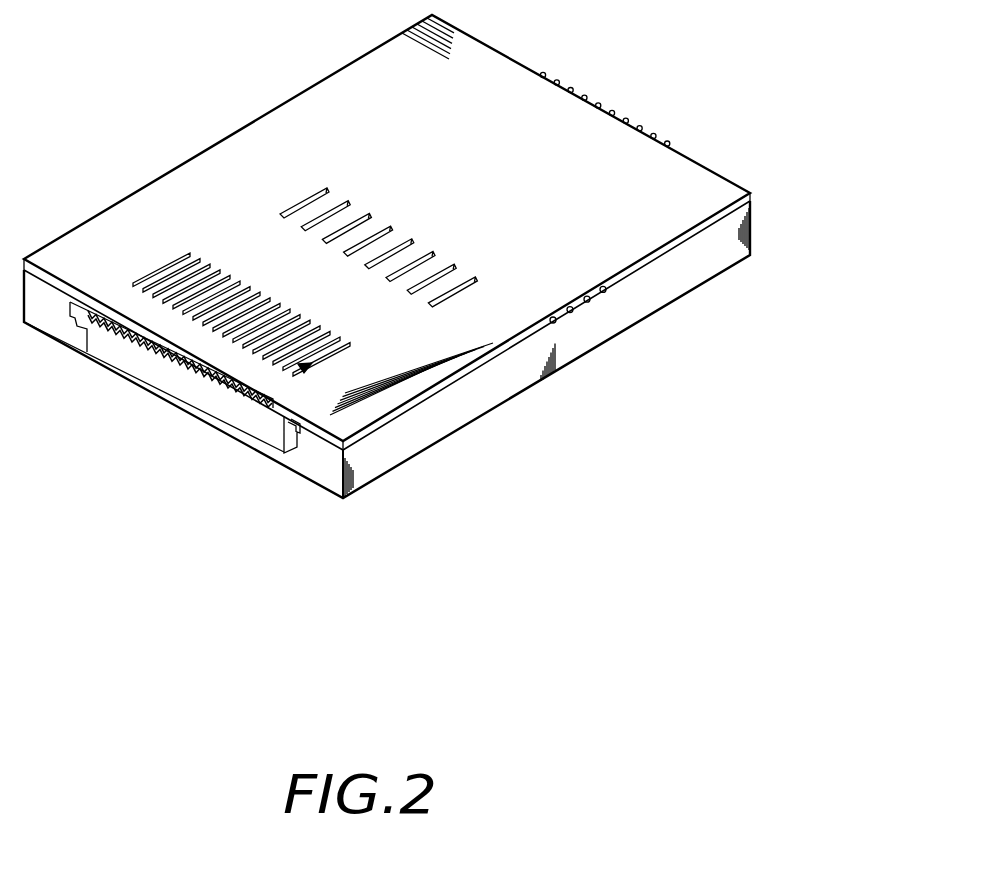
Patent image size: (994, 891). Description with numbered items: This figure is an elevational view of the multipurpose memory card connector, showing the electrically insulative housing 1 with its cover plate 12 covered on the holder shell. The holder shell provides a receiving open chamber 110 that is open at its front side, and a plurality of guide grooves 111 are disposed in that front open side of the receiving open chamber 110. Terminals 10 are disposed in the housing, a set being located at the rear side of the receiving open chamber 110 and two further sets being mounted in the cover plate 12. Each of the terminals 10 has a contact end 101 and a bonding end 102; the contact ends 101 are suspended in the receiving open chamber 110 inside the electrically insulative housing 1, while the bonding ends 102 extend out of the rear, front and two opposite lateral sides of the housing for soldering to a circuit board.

The electrically insulative housing 1 is at (592, 392).
The terminals 10 is at (633, 115).
The cover plate 12 is at (252, 96).
The contact end 101 is at (336, 352).
The bonding end 102 is at (587, 100).
The receiving open chamber 110 is at (272, 418).
The guide grooves 111 is at (70, 312).